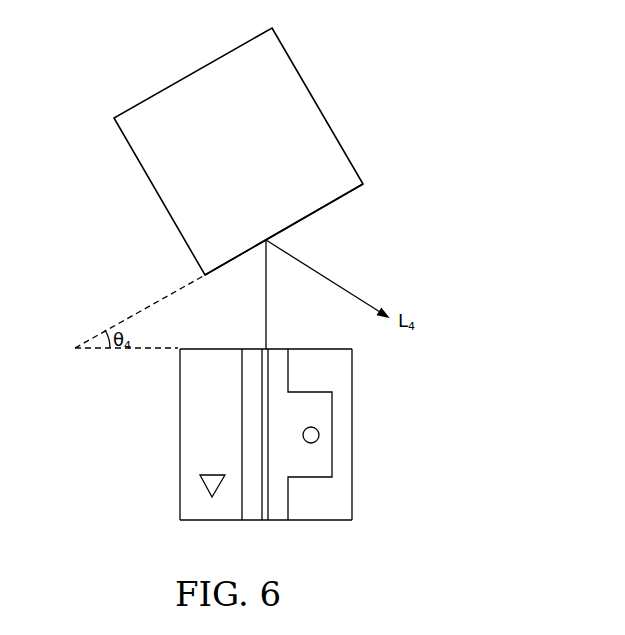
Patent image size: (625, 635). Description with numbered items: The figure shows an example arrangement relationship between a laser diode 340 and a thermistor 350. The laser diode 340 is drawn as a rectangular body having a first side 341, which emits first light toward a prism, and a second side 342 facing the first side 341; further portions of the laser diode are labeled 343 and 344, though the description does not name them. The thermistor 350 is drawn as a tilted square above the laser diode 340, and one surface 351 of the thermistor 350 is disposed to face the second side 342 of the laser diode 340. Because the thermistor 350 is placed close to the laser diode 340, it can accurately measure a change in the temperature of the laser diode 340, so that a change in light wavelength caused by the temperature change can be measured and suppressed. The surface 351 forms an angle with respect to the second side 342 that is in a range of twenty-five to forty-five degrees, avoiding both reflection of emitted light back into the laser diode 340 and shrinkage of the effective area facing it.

The thermistor 350 is at (382, 132).
The one surface of the thermistor 351 is at (330, 207).
The laser diode 340 is at (299, 438).
The first side 341 is at (308, 520).
The second side 342 is at (330, 349).
The sensor portion 343 is at (352, 445).
The side portion 344 is at (180, 441).